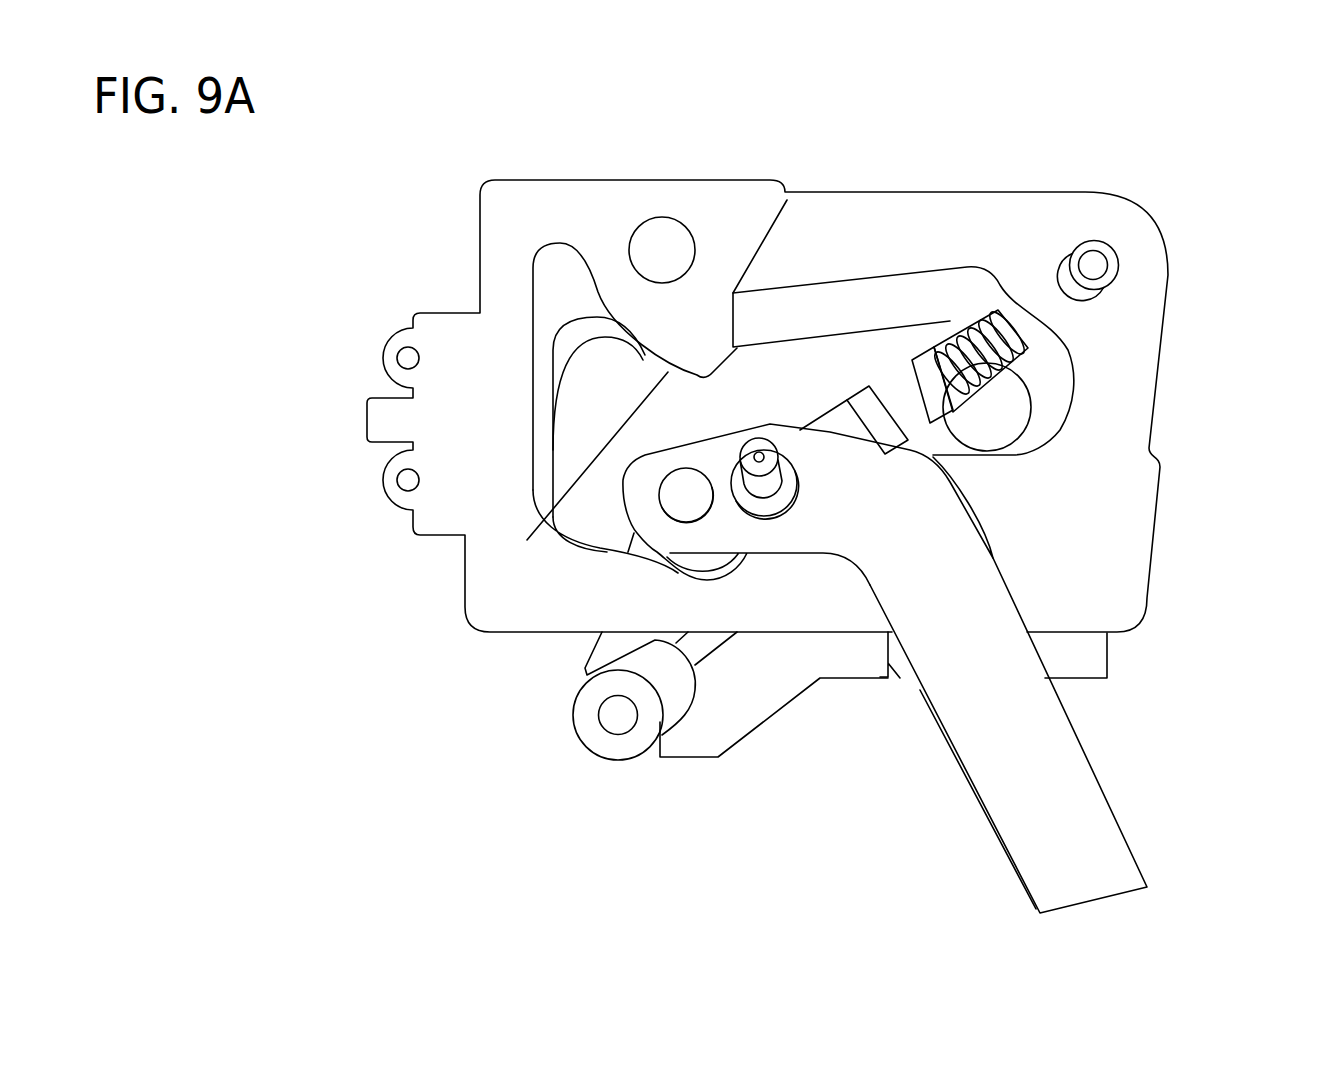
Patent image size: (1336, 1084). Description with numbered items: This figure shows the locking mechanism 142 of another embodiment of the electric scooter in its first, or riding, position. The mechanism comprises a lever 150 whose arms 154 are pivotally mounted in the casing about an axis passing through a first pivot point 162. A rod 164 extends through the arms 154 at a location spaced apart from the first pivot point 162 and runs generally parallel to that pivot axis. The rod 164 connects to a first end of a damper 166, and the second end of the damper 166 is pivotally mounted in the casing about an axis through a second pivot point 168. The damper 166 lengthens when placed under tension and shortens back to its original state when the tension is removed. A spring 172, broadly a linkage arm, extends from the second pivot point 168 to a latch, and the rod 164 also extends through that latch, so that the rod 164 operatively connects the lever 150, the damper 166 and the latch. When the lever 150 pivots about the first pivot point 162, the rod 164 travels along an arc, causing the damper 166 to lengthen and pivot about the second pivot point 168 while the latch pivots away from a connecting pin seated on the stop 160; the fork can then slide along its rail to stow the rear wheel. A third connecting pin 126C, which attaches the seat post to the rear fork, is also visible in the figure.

The locking mechanism 142 is at (298, 668).
The third connecting pin 126C is at (597, 737).
The lever 150 is at (1091, 744).
The arms 154 is at (1068, 793).
The stop 160 is at (733, 717).
The first pivot point 162 is at (673, 495).
The rod 164 is at (752, 448).
The damper 166 is at (863, 397).
The second pivot point 168 is at (1103, 247).
The spring 172 is at (917, 418).